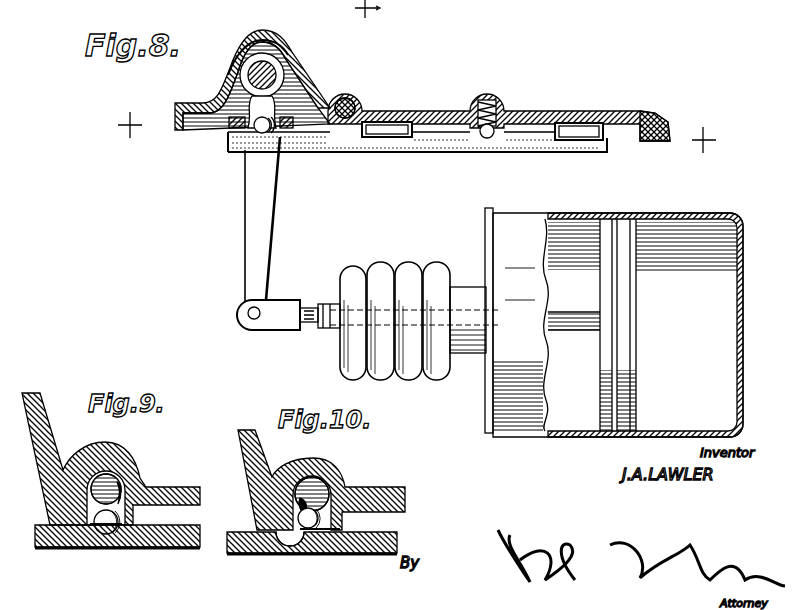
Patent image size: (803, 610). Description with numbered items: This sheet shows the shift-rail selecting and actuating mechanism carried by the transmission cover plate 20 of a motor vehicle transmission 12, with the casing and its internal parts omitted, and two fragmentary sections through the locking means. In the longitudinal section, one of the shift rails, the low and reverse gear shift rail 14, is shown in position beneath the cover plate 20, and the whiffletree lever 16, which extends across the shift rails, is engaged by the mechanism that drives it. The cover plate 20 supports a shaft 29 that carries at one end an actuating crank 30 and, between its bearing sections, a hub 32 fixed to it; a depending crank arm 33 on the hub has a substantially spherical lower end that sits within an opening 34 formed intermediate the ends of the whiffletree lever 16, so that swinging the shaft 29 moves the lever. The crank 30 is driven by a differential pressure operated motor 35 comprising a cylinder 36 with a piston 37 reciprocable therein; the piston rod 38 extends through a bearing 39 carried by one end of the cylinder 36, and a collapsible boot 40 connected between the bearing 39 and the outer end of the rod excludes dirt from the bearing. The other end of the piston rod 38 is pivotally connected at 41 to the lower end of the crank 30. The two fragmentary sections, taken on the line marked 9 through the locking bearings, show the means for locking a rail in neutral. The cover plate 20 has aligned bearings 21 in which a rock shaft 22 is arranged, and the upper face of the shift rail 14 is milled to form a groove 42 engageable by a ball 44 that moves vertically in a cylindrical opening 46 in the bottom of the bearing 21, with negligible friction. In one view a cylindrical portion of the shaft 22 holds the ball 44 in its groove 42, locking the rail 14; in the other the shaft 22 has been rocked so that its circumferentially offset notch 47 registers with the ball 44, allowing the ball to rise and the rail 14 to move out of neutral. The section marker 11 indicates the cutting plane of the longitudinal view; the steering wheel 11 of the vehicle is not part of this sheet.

In FIG. 8, the section line 9 is at (367, 17).
In FIG. 8, the steering wheel 11 is at (415, 126).
In FIG. 8, the transmission 12 is at (652, 116).
In FIG. 8, the low and reverse gear shift rail 14 is at (442, 147).
In FIG. 9, the low and reverse gear shift rail 14 is at (150, 545).
In FIG. 10, the low and reverse gear shift rail 14 is at (350, 546).
In FIG. 8, the whiffletree lever 16 is at (305, 100).
In FIG. 8, the cover plate 20 is at (572, 112).
In FIG. 9, the cover plate 20 is at (180, 490).
In FIG. 10, the cover plate 20 is at (385, 497).
In FIG. 9, the bearings 21 is at (118, 472).
In FIG. 10, the bearings 21 is at (328, 478).
In FIG. 8, the rock shaft 22 is at (360, 92).
In FIG. 9, the rock shaft 22 is at (123, 478).
In FIG. 10, the rock shaft 22 is at (322, 496).
In FIG. 8, the shaft 29 is at (275, 63).
In FIG. 8, the actuating crank 30 is at (245, 222).
In FIG. 8, the hub 32 is at (255, 55).
In FIG. 8, the crank arm 33 is at (260, 134).
In FIG. 8, the opening 34 is at (234, 127).
In FIG. 8, the motor 35 is at (587, 213).
In FIG. 8, the cylinder 36 is at (690, 213).
In FIG. 8, the piston 37 is at (630, 304).
In FIG. 8, the piston rod 38 is at (576, 320).
In FIG. 8, the bearing 39 is at (458, 290).
In FIG. 8, the collapsible boot 40 is at (412, 262).
In FIG. 8, the pivotal connection 41 is at (250, 330).
In FIG. 9, the groove 42 is at (87, 527).
In FIG. 10, the groove 42 is at (285, 536).
In FIG. 8, the ball 44 is at (345, 137).
In FIG. 9, the ball 44 is at (100, 530).
In FIG. 10, the ball 44 is at (306, 530).
In FIG. 9, the openings 46 is at (90, 525).
In FIG. 10, the openings 46 is at (340, 524).
In FIG. 9, the notch 47 is at (118, 482).
In FIG. 10, the notch 47 is at (312, 500).